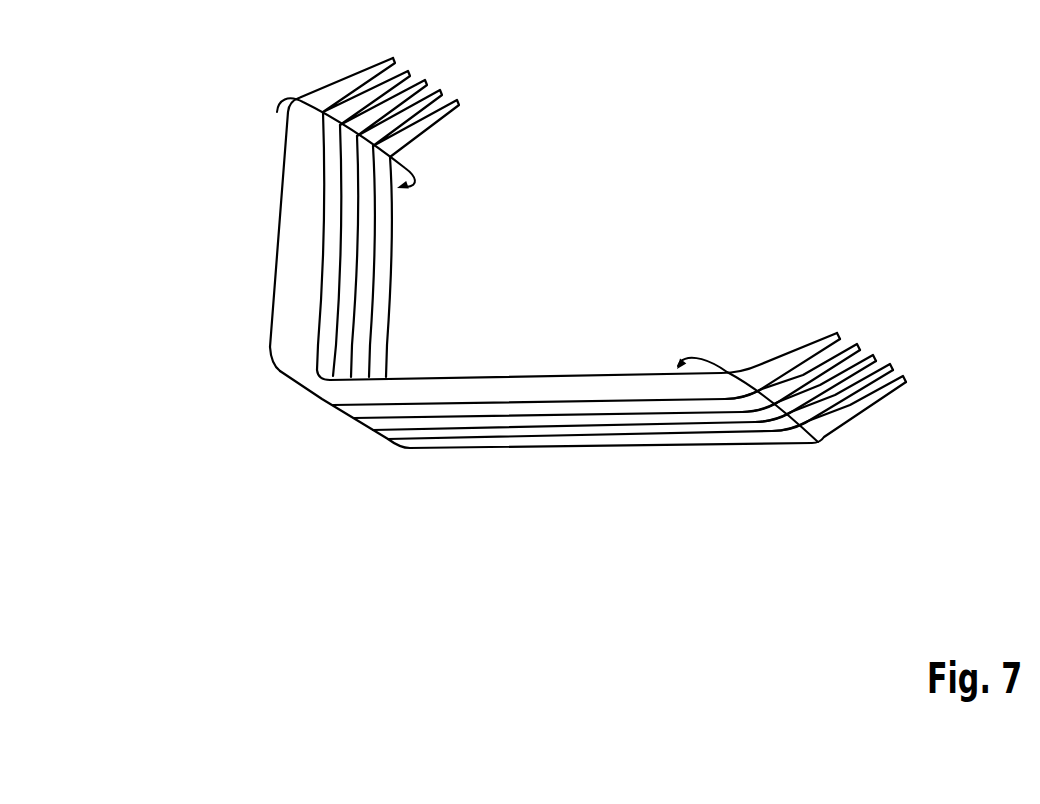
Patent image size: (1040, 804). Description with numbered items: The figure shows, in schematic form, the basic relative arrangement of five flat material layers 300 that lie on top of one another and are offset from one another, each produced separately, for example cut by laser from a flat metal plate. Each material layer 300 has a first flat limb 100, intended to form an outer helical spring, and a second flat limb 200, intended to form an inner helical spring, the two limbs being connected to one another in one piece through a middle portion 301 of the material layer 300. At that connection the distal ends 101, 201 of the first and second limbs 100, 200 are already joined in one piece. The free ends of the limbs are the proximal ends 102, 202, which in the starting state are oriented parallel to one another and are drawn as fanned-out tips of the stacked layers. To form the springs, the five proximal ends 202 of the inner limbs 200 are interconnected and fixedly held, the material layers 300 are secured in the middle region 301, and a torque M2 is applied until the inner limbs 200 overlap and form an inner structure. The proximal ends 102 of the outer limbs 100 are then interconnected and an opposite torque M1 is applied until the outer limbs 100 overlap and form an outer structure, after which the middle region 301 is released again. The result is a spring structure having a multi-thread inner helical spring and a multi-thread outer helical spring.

The first limb 100 is at (256, 232).
The distal end of first limb 101 is at (297, 365).
The proximal end of first limb 102 is at (367, 78).
The second limb 200 is at (618, 454).
The distal end of second limb 201 is at (330, 389).
The proximal end of second limb 202 is at (880, 390).
The material layer 300 is at (396, 292).
The middle portion 301 is at (296, 392).
The torque M1 is at (375, 40).
The torque M2 is at (837, 312).